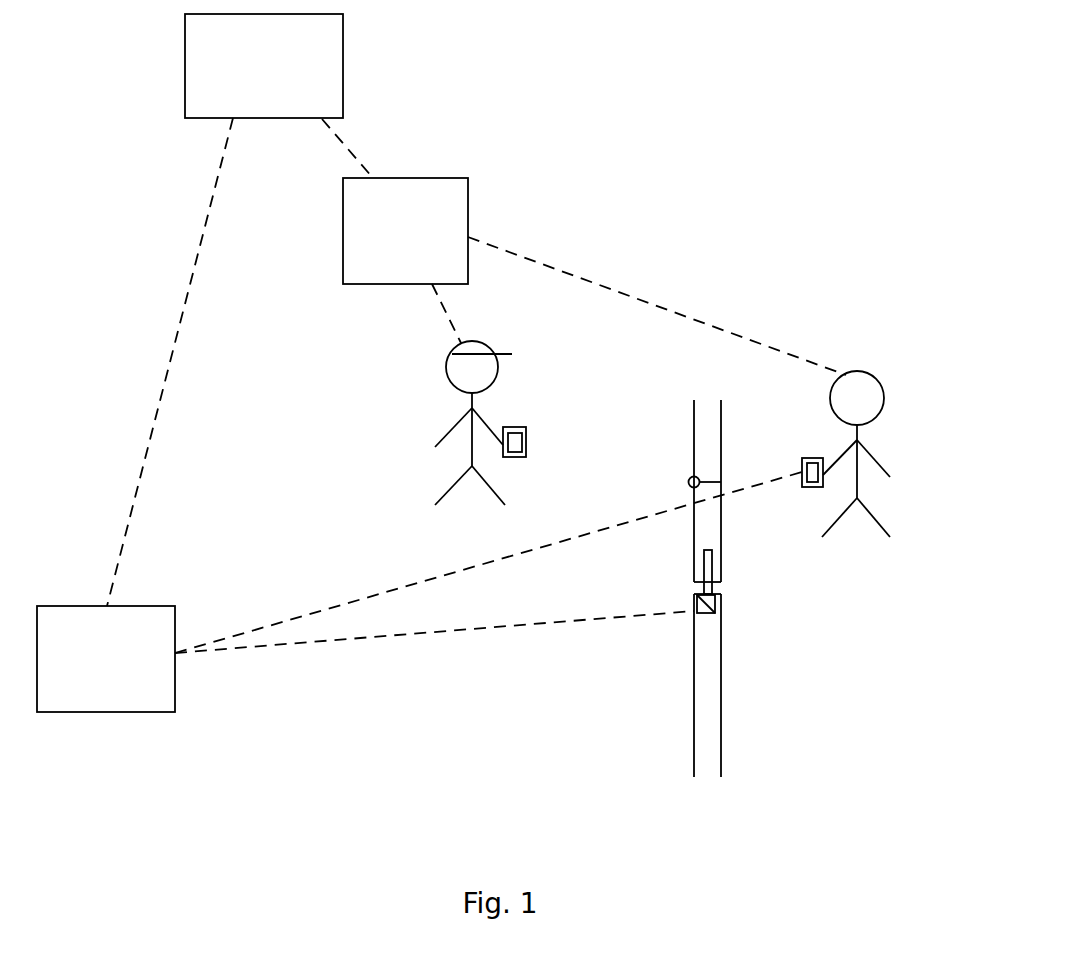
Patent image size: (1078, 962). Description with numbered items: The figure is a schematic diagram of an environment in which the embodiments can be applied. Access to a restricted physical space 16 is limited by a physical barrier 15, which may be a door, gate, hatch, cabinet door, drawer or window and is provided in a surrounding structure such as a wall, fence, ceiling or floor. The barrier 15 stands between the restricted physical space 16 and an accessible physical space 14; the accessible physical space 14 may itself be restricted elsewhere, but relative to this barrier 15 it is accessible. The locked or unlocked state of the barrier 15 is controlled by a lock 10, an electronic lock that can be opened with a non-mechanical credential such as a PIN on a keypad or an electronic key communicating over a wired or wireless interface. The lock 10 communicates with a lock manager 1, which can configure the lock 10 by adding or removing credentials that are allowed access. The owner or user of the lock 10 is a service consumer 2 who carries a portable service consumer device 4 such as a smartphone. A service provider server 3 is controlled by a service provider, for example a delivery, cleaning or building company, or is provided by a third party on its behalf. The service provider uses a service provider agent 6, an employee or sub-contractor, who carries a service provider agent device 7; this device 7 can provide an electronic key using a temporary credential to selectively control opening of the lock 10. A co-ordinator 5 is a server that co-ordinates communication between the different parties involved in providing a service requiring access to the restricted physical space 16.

The lock manager 1 is at (98, 638).
The service consumer 2 is at (880, 385).
The service provider server 3 is at (397, 213).
The service consumer device 4 is at (805, 458).
The co-ordinator 5 is at (256, 46).
The service provider agent 6 is at (489, 352).
The service provider agent device 7 is at (511, 427).
The lock 10 is at (717, 600).
The accessible physical space 14 is at (538, 745).
The physical barrier 15 is at (708, 541).
The physical space 16 is at (853, 745).